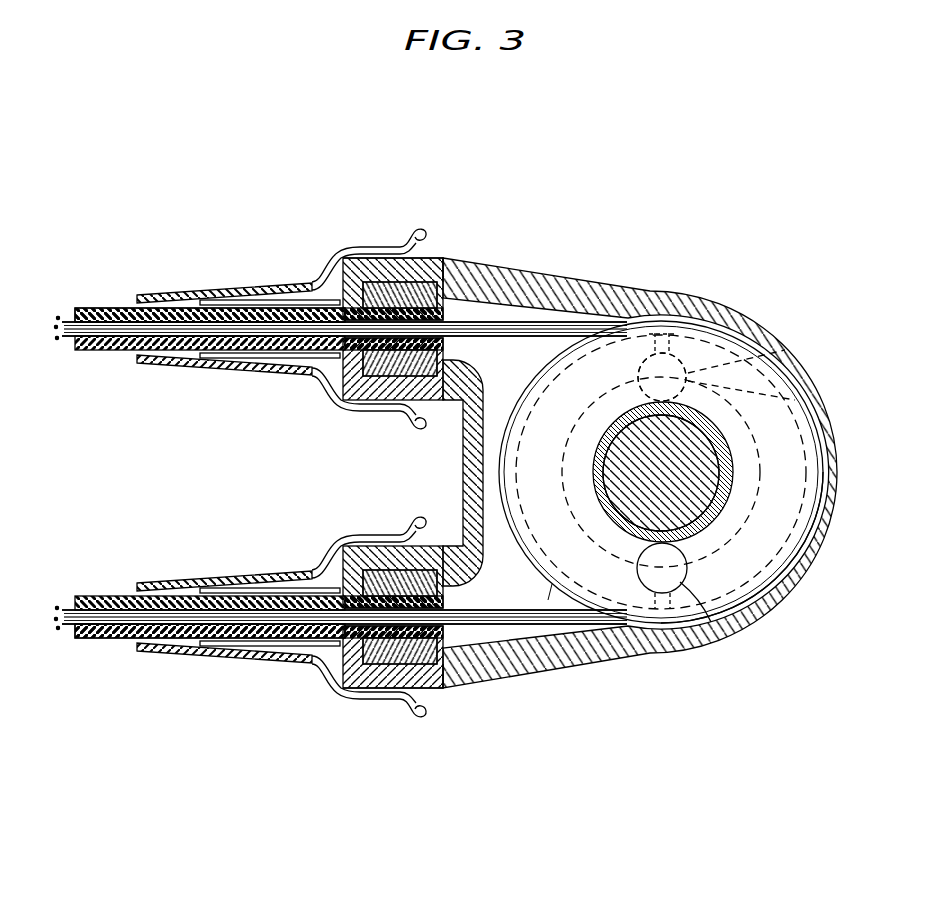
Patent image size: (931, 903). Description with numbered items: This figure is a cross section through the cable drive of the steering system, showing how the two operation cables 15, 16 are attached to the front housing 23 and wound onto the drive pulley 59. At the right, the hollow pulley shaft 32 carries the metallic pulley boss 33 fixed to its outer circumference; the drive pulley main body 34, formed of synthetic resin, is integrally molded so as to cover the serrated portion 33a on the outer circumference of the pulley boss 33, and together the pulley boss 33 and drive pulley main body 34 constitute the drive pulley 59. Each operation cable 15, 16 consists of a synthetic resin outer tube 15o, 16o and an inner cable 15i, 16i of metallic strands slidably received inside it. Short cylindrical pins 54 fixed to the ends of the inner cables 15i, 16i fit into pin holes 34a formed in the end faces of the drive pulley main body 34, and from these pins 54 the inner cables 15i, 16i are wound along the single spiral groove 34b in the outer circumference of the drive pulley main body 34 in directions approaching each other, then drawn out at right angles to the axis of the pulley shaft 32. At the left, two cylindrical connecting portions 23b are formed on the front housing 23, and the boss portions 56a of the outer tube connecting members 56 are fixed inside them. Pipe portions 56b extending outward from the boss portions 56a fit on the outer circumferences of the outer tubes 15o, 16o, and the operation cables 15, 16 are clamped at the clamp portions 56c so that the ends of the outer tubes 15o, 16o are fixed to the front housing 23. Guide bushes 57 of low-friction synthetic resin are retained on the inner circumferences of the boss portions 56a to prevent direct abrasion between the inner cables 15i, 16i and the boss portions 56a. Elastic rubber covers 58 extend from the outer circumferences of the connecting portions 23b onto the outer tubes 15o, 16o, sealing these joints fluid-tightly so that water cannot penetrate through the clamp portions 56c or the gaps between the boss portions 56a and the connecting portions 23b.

The operation cable 15 is at (88, 247).
The inner cable 15i is at (104, 321).
The outer tube 15o is at (168, 308).
The operation cable 16 is at (84, 507).
The inner cable 16i is at (103, 609).
The outer tube 16o is at (128, 594).
The front housing 23 is at (623, 290).
The connecting portion 23b is at (380, 262).
The pulley shaft 32 is at (648, 486).
The pulley boss 33 is at (726, 472).
The serrated portion 33a is at (685, 367).
The drive pulley main body 34 is at (514, 407).
The pin hole 34a is at (738, 614).
The spiral groove 34b is at (528, 570).
The pin 54 is at (783, 351).
The outer tube connecting member 56 is at (333, 297).
The boss portion 56a is at (389, 283).
The pipe portion 56b is at (277, 297).
The clamp portion 56c is at (250, 362).
The guide bush 57 is at (391, 388).
The rubber cover 58 is at (312, 383).
The drive pulley 59 is at (551, 585).